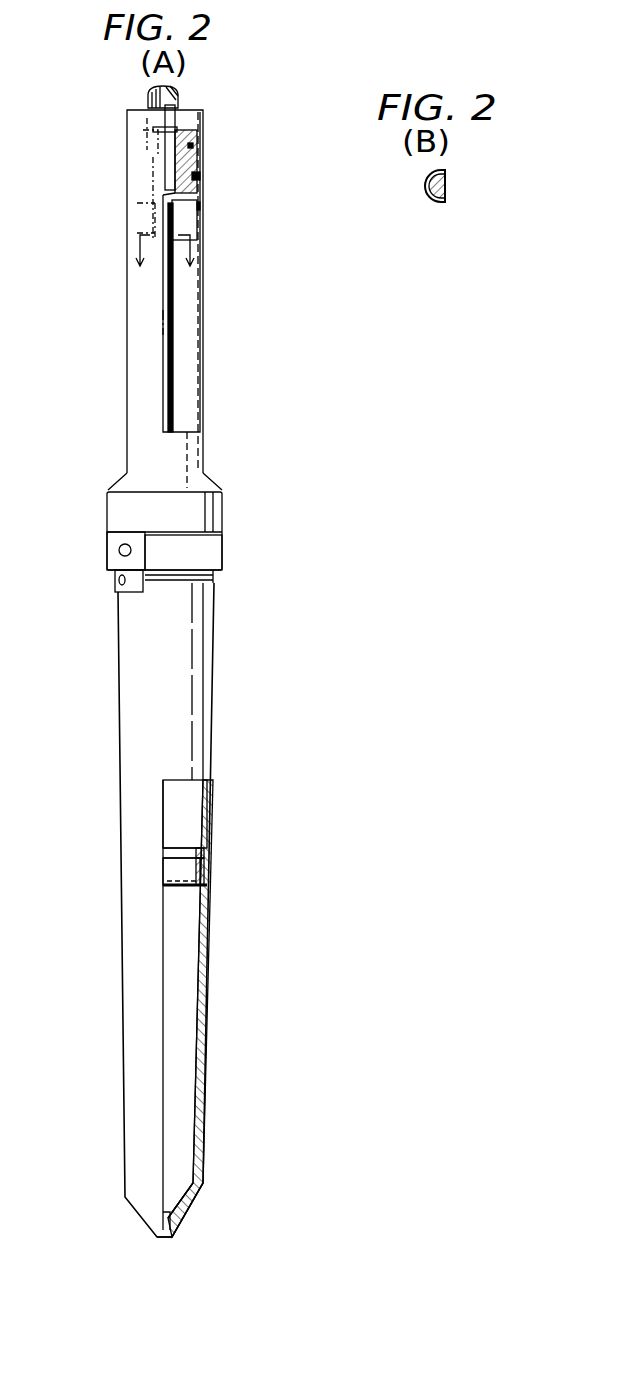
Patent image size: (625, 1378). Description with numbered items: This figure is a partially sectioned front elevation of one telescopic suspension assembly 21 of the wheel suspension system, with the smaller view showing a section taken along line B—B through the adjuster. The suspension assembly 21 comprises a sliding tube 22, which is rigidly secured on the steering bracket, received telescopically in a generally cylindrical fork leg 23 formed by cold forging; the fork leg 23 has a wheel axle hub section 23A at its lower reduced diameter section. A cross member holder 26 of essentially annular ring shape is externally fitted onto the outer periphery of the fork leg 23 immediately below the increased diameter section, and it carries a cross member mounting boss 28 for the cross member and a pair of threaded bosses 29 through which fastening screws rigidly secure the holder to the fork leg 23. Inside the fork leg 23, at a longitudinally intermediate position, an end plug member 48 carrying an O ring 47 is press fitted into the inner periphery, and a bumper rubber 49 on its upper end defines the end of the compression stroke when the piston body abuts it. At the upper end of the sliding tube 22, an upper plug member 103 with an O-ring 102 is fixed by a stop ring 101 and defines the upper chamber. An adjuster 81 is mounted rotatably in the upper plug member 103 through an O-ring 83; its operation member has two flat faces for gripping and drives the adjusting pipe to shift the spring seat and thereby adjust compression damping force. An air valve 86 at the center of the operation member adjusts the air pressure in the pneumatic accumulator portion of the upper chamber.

The telescopic suspension assembly 21 is at (109, 350).
The sliding tube 22 is at (203, 337).
The fork leg 23 is at (228, 752).
The wheel axle hub section 23A is at (175, 1228).
The cross member holder 26 is at (214, 560).
The cross member mounting boss 28 is at (108, 548).
The threaded boss 29 is at (112, 586).
The O ring 47 is at (204, 865).
The end plug member 48 is at (210, 885).
The bumper rubber 49 is at (206, 850).
The adjuster 81 is at (205, 137).
The O-ring 83 is at (200, 152).
The air valve 86 is at (178, 92).
The stop ring 101 is at (195, 147).
The O-ring 102 is at (200, 158).
The upper plug member 103 is at (202, 170).